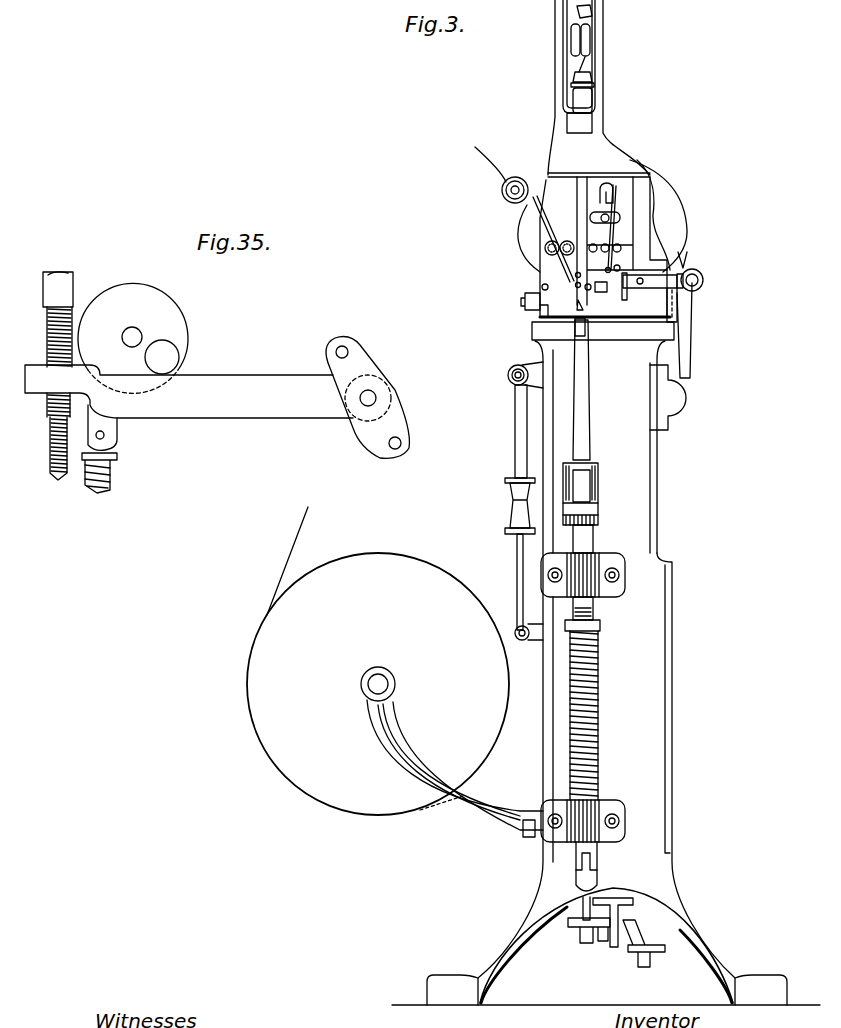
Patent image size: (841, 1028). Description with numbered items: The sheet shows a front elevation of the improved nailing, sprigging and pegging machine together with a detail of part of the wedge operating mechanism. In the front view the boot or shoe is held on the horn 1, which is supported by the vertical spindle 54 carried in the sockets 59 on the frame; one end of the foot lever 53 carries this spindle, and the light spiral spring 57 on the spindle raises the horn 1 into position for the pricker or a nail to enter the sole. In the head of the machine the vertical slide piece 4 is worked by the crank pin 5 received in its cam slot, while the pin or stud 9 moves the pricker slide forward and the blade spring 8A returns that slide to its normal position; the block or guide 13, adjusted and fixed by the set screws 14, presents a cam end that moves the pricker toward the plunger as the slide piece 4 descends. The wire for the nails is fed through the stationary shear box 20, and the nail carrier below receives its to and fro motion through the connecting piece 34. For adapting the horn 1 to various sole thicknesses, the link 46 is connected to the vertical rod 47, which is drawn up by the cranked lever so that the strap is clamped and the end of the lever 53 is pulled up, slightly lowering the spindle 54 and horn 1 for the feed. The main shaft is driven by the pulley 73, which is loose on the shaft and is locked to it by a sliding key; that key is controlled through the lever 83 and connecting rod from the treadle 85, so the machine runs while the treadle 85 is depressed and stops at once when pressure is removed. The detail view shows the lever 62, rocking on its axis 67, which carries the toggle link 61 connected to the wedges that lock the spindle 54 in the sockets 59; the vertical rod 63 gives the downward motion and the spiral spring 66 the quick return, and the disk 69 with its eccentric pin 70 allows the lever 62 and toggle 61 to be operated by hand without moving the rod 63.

In FIG. 3, the horn 1 is at (588, 383).
In FIG. 3, the slide piece 4 is at (600, 190).
In FIG. 3, the crank pin 5 is at (620, 217).
In FIG. 3, the blade spring 8A is at (612, 233).
In FIG. 3, the pin or stud 9 is at (660, 290).
In FIG. 3, the block or guide 13 is at (683, 266).
In FIG. 3, the set screws 14 is at (703, 282).
In FIG. 3, the shear box 20 is at (545, 310).
In FIG. 3, the connecting piece 34 is at (528, 290).
In FIG. 3, the link 46 is at (515, 630).
In FIG. 3, the vertical rod 47 is at (510, 556).
In FIG. 3, the foot lever 53 is at (580, 945).
In FIG. 3, the vertical spindle 54 is at (599, 738).
In FIG. 3, the spiral spring 57 is at (599, 680).
In FIG. 3, the sockets 59 is at (602, 555).
In FIG. 3, the pulley 73 is at (700, 183).
In FIG. 3, the lever 83 is at (688, 412).
In FIG. 3, the treadle 85 is at (655, 955).
In FIG. 35, the toggle link 61 is at (365, 372).
In FIG. 35, the lever 62 is at (189, 407).
In FIG. 35, the vertical rod 63 is at (47, 328).
In FIG. 35, the spiral spring 66 is at (112, 468).
In FIG. 35, the axis 67 is at (376, 398).
In FIG. 35, the disk 69 is at (133, 338).
In FIG. 35, the eccentric pin 70 is at (170, 356).